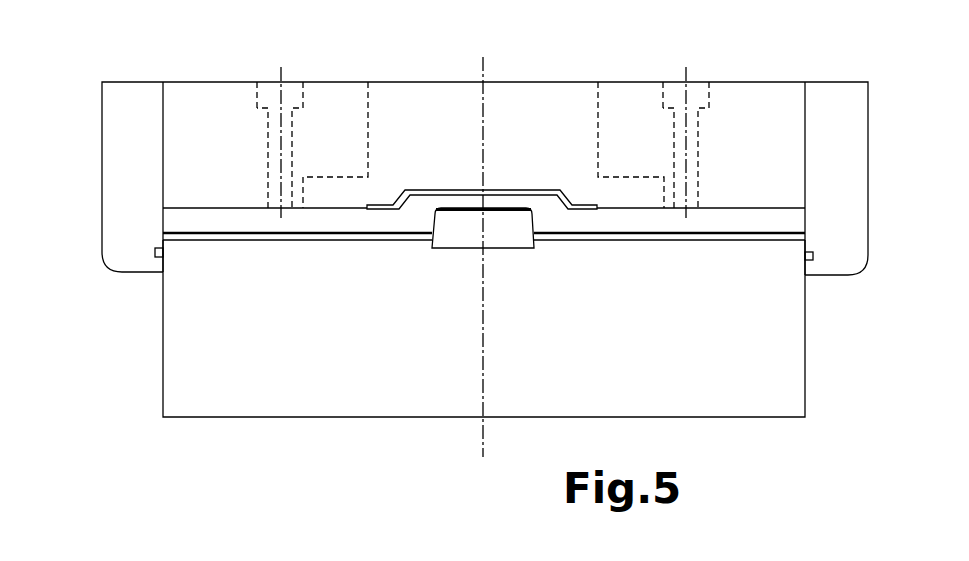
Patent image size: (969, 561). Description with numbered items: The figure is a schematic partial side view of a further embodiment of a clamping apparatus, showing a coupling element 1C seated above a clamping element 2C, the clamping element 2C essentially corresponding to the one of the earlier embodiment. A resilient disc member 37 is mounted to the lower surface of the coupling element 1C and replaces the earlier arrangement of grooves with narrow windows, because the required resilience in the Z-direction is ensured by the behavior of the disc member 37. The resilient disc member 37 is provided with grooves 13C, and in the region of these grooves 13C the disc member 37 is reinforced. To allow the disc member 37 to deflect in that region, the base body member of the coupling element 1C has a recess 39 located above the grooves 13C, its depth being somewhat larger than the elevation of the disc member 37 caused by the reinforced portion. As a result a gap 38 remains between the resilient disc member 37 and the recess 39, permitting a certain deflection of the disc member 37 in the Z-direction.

The coupling element 1C is at (92, 132).
The clamping element 2C is at (137, 367).
The resilient disc member 37 is at (168, 224).
The gap 38 is at (537, 193).
The recess 39 is at (425, 182).
The grooves 13C is at (425, 227).